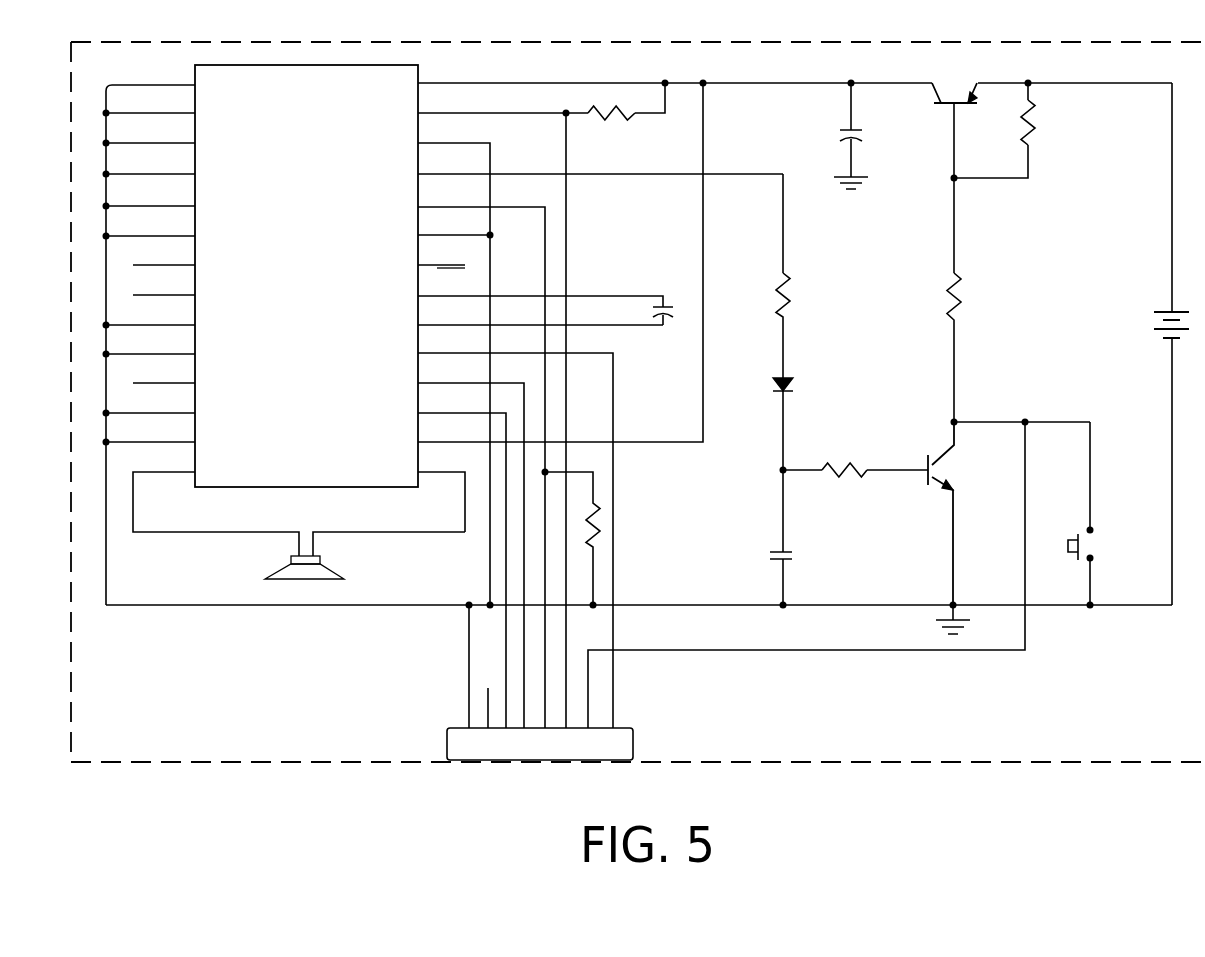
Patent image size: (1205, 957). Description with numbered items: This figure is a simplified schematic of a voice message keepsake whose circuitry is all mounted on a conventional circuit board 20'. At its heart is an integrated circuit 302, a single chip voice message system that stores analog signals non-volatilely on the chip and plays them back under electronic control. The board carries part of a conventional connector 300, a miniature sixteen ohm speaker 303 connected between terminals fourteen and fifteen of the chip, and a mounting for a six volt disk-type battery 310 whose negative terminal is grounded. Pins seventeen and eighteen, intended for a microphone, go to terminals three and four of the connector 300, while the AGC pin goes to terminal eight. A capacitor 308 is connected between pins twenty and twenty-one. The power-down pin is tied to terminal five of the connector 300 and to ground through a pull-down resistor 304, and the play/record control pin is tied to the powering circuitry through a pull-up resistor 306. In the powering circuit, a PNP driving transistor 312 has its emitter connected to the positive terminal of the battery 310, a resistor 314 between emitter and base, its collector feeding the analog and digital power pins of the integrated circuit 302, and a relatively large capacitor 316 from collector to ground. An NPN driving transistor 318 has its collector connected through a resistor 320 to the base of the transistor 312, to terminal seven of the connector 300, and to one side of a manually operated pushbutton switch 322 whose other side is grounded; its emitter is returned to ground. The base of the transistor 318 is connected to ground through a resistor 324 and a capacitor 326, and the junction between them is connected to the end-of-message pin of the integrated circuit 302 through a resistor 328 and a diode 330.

The circuit board 20' is at (638, 381).
The connector 300 is at (636, 738).
The integrated circuit 302 is at (280, 290).
The speaker 303 is at (333, 575).
The pull-down resistor 304 is at (598, 539).
The pull-up resistor 306 is at (613, 118).
The capacitor 308 is at (668, 316).
The battery 310 is at (1160, 322).
The PNP driving transistor 312 is at (957, 91).
The resistor 314 is at (1040, 120).
The capacitor 316 is at (843, 130).
The NPN driving transistor 318 is at (924, 482).
The resistor 320 is at (962, 297).
The pushbutton switch 322 is at (1082, 547).
The resistor 324 is at (826, 470).
The capacitor 326 is at (795, 560).
The resistor 328 is at (790, 296).
The diode 330 is at (786, 384).